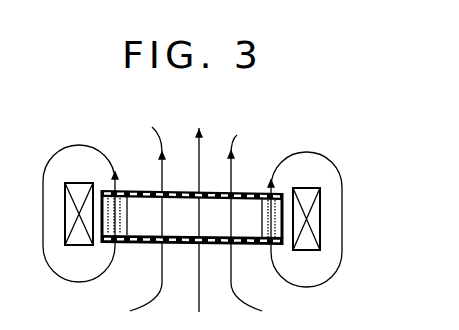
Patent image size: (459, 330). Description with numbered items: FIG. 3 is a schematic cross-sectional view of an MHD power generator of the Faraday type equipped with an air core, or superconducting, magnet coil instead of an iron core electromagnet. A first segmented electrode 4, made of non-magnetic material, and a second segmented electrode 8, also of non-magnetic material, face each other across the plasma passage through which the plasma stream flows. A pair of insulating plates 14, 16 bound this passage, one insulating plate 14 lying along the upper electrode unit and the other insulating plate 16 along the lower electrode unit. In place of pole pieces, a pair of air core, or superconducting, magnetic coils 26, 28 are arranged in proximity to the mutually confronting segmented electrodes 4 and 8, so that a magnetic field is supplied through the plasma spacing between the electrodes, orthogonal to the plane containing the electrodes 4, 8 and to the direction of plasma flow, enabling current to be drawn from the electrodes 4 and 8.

The superconducting magnetic coil 26 is at (67, 200).
The superconducting magnetic coil 28 is at (310, 192).
The insulating plate 14 is at (245, 193).
The insulating plate 16 is at (212, 243).
The first segmented electrode 4 is at (120, 232).
The second segmented electrode 8 is at (262, 233).